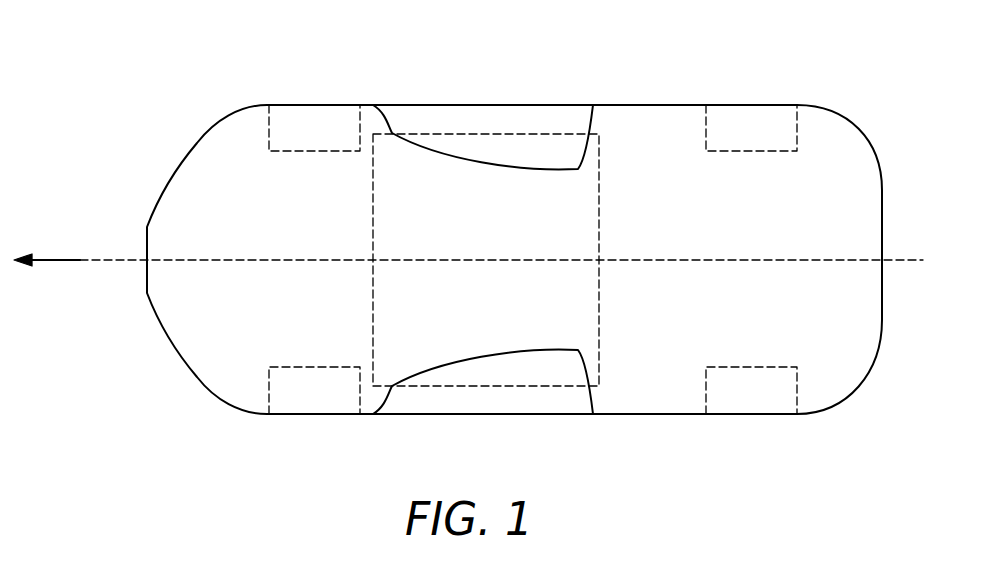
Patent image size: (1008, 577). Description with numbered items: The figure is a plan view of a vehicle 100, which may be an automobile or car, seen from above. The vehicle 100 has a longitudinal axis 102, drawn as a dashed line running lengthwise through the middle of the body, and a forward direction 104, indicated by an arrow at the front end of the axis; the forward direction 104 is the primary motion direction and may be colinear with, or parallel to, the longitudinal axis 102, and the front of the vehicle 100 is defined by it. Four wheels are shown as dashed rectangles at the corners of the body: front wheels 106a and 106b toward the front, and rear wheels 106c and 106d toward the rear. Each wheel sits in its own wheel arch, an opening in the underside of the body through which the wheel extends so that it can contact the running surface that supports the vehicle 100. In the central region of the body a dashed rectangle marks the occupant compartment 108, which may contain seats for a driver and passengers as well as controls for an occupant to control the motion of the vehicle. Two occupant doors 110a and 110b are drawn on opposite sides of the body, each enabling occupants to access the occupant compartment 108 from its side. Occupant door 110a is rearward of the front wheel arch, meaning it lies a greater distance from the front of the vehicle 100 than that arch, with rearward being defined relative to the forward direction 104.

The vehicle 100 is at (120, 50).
The longitudinal axis 102 is at (103, 264).
The forward direction 104 is at (49, 258).
The front wheel 106a is at (317, 400).
The front wheel 106b is at (313, 120).
The rear wheel 106c is at (751, 400).
The rear wheel 106d is at (750, 120).
The occupant compartment 108 is at (600, 200).
The occupant door 110a is at (520, 400).
The occupant door 110b is at (520, 120).